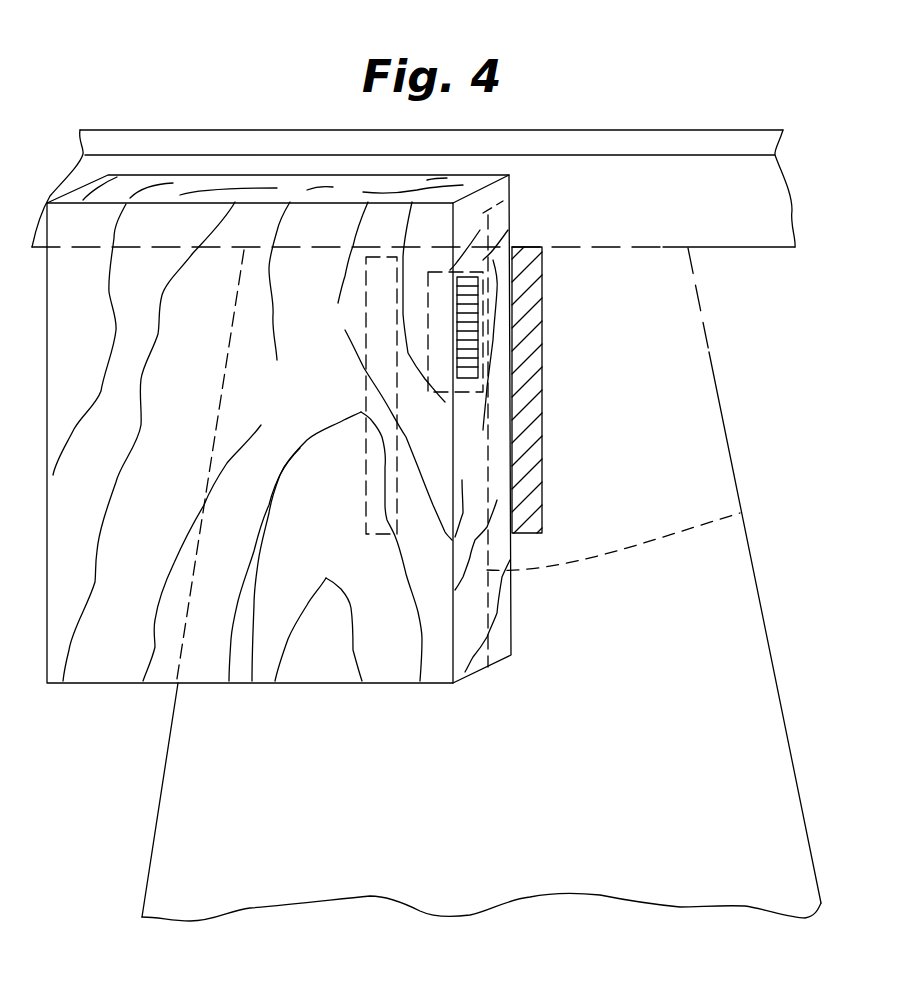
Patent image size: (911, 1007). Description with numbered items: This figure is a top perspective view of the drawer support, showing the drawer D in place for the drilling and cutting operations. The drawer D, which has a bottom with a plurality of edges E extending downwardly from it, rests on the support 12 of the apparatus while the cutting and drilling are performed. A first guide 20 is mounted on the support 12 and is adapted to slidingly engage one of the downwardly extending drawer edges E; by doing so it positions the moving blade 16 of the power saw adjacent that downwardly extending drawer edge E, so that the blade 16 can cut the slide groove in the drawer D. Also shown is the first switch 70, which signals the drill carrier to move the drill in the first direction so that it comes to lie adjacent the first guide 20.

The support 12 is at (748, 770).
The first switch 70 is at (413, 165).
The moving blade 16 is at (470, 272).
The first guide 20 is at (541, 400).
The drawer D is at (313, 217).
The edges E is at (740, 513).